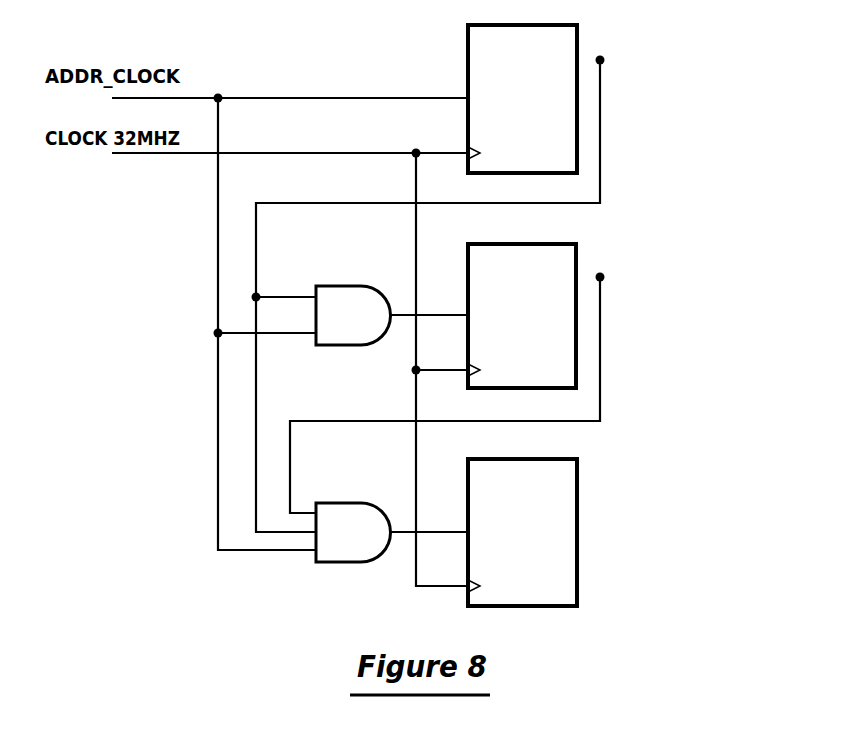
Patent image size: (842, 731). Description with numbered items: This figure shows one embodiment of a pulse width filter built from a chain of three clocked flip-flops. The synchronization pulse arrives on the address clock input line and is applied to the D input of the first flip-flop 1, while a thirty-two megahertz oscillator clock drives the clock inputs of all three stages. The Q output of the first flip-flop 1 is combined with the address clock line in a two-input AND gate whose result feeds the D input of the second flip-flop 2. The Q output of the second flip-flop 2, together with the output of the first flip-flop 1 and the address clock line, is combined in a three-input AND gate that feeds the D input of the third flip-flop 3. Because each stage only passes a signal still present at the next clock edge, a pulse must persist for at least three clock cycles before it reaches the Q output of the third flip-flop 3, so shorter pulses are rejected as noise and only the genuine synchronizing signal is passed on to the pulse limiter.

The flip-flop AQ1 1 is at (577, 60).
The flip-flop AQ2 2 is at (576, 277).
The flip-flop AQ3 3 is at (577, 493).